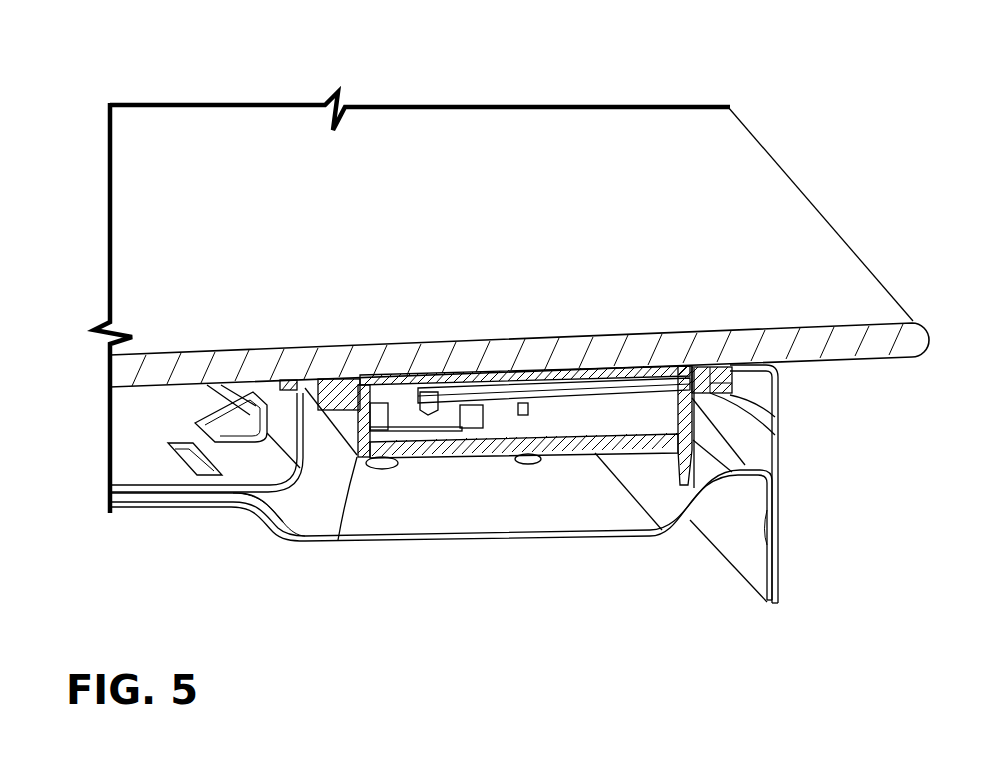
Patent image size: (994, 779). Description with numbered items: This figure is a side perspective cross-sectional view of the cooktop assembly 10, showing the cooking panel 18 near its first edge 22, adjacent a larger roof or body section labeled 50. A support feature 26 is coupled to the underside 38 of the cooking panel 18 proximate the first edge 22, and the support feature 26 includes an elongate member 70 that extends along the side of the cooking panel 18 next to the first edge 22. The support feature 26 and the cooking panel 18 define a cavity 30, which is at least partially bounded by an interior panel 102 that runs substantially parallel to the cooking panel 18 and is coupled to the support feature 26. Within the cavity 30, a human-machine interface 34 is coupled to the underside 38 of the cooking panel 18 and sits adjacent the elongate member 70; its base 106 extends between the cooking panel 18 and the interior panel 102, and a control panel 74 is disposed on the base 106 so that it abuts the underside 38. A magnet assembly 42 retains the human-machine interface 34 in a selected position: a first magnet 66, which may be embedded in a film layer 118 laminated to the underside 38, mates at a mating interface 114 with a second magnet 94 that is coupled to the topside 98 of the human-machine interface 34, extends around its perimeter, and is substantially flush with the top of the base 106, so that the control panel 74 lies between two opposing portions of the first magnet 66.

The cooktop assembly 10 is at (795, 102).
The cooking panel 18 is at (155, 257).
The first edge 22 is at (825, 215).
The support feature 26 is at (796, 594).
The cavity 30 is at (560, 492).
The human-machine interface 34 is at (495, 470).
The underside 38 is at (838, 361).
The magnet assembly 42 is at (700, 348).
The roof panel 50 is at (227, 137).
The first magnet 66 is at (272, 385).
The elongate member 70 is at (783, 561).
The control panel 74 is at (448, 380).
The second magnet 94 is at (362, 459).
The topside 98 is at (336, 405).
The interior panel 102 is at (652, 531).
The base 106 is at (706, 531).
The mating interface 114 is at (277, 515).
The film layer 118 is at (737, 400).